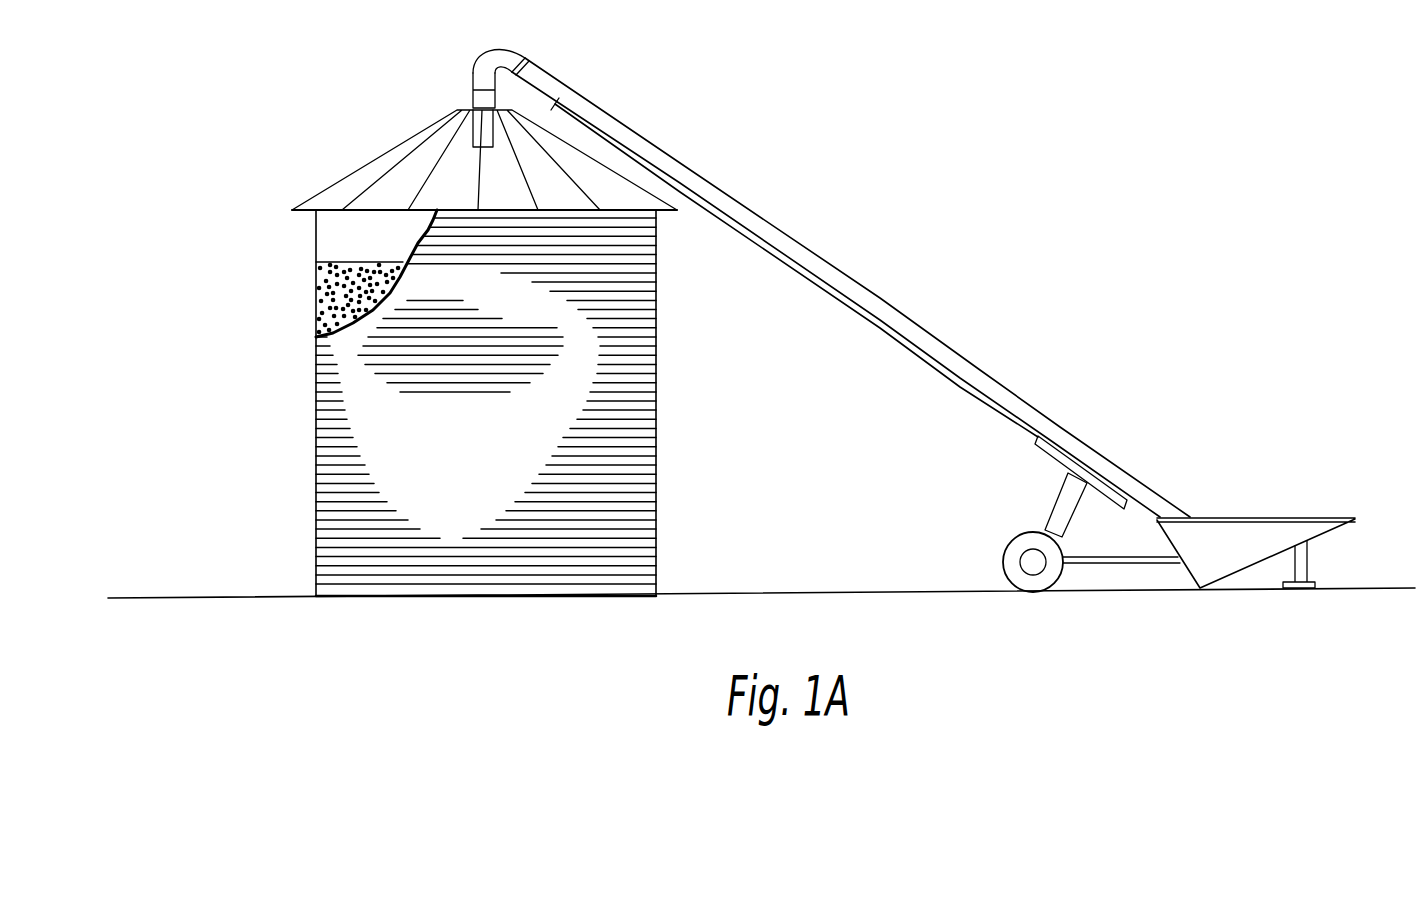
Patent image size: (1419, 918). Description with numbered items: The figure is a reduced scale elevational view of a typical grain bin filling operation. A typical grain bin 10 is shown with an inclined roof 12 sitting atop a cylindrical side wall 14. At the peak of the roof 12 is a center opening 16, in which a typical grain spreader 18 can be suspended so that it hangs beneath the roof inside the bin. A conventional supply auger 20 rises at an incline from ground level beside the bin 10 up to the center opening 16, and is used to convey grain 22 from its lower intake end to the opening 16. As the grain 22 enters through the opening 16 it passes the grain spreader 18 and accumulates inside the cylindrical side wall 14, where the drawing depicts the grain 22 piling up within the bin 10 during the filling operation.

The grain bin 10 is at (293, 152).
The inclined roof 12 is at (408, 162).
The cylindrical side wall 14 is at (657, 357).
The center opening 16 is at (445, 80).
The grain spreader 18 is at (495, 138).
The supply auger 20 is at (817, 257).
The grain 22 is at (328, 293).